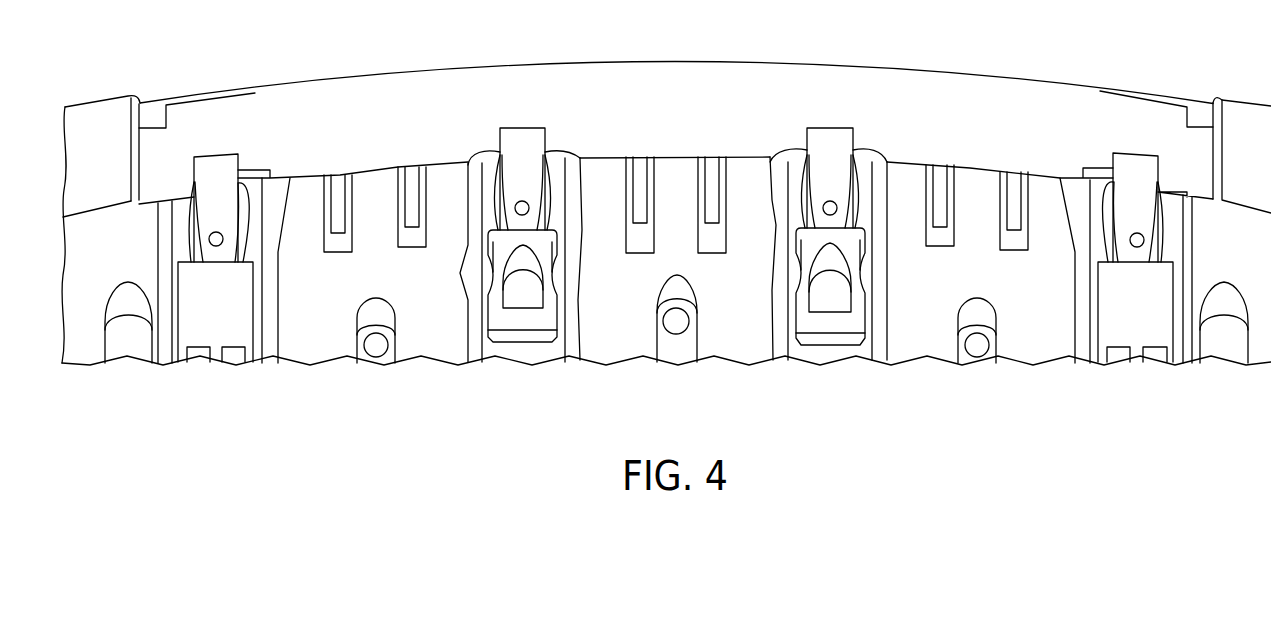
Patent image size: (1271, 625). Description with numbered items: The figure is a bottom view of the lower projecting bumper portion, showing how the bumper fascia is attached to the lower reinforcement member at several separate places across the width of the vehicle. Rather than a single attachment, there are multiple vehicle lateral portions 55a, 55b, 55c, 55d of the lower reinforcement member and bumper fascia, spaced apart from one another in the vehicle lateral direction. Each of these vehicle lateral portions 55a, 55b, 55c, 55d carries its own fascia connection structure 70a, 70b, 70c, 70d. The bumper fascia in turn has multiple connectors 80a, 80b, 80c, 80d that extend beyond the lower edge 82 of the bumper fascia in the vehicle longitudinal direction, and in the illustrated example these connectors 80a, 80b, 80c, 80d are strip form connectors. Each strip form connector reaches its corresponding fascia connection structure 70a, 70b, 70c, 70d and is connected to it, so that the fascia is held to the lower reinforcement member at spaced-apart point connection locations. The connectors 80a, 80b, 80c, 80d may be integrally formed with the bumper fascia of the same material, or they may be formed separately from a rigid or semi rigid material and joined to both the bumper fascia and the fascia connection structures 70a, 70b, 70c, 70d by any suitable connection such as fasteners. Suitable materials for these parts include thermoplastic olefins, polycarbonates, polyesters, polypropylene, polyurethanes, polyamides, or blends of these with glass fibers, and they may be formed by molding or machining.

The vehicle lateral portion 55a is at (233, 133).
The vehicle lateral portion 55b is at (539, 108).
The vehicle lateral portion 55c is at (812, 108).
The vehicle lateral portion 55d is at (1120, 135).
The fascia connection structure 70a is at (212, 222).
The fascia connection structure 70b is at (512, 192).
The fascia connection structure 70c is at (824, 190).
The fascia connection structure 70d is at (1130, 222).
The connector 80a is at (217, 170).
The connector 80b is at (522, 138).
The connector 80c is at (830, 138).
The connector 80d is at (1135, 170).
The lower edge 82 is at (677, 155).